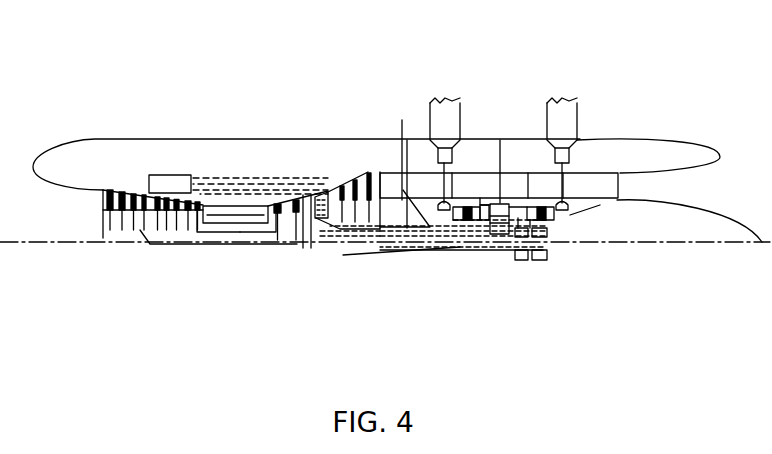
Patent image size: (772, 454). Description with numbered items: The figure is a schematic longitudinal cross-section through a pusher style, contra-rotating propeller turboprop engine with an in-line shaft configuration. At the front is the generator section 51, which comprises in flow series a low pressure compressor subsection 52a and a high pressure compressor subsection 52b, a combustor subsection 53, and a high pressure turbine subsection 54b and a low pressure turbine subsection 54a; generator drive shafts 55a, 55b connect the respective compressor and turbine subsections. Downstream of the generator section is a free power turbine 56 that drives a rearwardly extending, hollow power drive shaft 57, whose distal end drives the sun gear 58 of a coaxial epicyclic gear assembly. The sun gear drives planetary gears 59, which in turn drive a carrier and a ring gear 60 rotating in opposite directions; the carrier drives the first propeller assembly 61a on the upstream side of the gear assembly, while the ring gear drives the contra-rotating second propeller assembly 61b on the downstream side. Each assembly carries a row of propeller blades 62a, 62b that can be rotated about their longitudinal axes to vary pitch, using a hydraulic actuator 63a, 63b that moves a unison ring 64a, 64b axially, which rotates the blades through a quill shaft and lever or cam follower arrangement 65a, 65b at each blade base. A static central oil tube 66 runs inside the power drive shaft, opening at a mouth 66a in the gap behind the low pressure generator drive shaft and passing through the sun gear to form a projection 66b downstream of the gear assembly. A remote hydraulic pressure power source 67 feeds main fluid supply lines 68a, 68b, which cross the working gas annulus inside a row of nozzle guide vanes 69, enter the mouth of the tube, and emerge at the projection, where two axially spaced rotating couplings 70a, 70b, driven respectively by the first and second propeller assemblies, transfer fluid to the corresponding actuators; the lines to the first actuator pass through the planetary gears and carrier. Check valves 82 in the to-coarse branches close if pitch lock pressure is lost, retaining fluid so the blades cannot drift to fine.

The generator section 51 is at (181, 322).
The low pressure compressor subsection 52a is at (107, 232).
The high pressure compressor subsection 52b is at (162, 234).
The combustor subsection 53 is at (227, 224).
The low pressure turbine subsection 54a is at (292, 246).
The high pressure turbine subsection 54b is at (274, 229).
The low pressure generator drive shaft 55a is at (204, 242).
The high pressure generator drive shaft 55b is at (237, 234).
The free power turbine 56 is at (346, 183).
The power drive shaft 57 is at (380, 172).
The sun gear 58 is at (517, 238).
The planetary gears 59 is at (505, 234).
The ring gear 60 is at (503, 173).
The first propeller assembly 61a is at (446, 64).
The second propeller assembly 61b is at (609, 106).
The propeller blades of the first propeller assembly 62a is at (428, 104).
The propeller blades of the second propeller assembly 62b is at (550, 100).
The hydraulic actuator of the first propeller assembly 63a is at (466, 220).
The hydraulic actuator of the second propeller assembly 63b is at (558, 212).
The first unison ring 64a is at (410, 235).
The second unison ring 64b is at (572, 216).
The quill shaft and lever or cam follower arrangement of the first propeller assembl 65a is at (448, 200).
The quill shaft and lever or cam follower arrangement of the second propeller assemb 65b is at (558, 203).
The central oil tube 66 is at (455, 240).
The mouth of the central oil tube 66a is at (341, 252).
The projection of the central oil tube 66b is at (510, 246).
The hydraulic pressure power source 67 is at (163, 175).
The main fluid supply lines to the first actuator 68a is at (268, 180).
The main fluid supply lines to the second actuator 68b is at (222, 181).
The nozzle guide vanes 69 is at (330, 180).
The upstream main hydraulic rotating coupling 70a is at (522, 260).
The downstream main hydraulic rotating coupling 70b is at (541, 260).
The check valve 82 is at (402, 161).